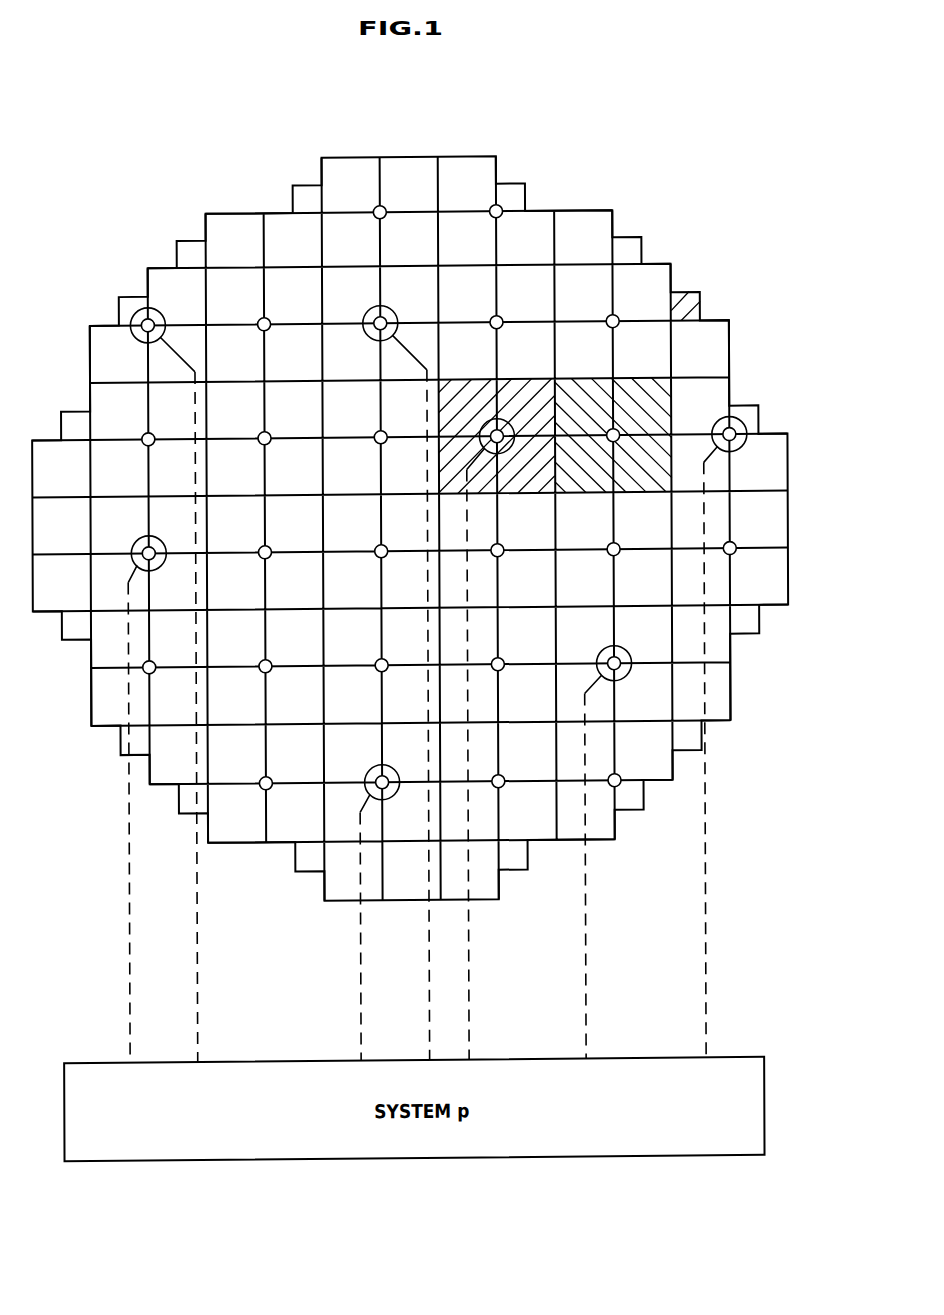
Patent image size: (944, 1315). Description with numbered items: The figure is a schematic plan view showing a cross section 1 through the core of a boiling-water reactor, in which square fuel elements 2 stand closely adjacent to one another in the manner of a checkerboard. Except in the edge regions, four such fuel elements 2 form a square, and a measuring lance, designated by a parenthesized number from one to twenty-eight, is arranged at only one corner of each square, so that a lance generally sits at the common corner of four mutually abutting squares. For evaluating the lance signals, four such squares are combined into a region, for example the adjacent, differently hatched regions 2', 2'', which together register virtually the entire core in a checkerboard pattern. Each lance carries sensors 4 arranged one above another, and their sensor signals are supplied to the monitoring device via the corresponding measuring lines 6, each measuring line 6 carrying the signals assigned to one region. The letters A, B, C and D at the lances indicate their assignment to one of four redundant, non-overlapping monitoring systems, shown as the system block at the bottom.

The cross section through a reactor core 1 is at (410, 522).
The fuel element 2 is at (696, 285).
The region 2' is at (664, 426).
The region 2'' is at (608, 408).
The sensors 4 is at (435, 990).
The measuring lines 6 is at (584, 988).